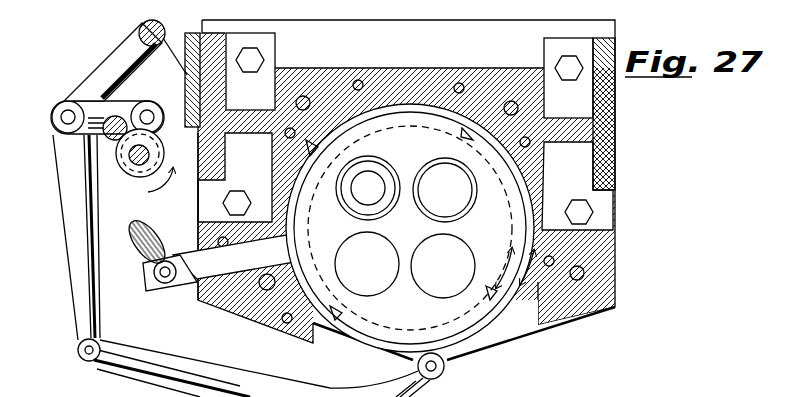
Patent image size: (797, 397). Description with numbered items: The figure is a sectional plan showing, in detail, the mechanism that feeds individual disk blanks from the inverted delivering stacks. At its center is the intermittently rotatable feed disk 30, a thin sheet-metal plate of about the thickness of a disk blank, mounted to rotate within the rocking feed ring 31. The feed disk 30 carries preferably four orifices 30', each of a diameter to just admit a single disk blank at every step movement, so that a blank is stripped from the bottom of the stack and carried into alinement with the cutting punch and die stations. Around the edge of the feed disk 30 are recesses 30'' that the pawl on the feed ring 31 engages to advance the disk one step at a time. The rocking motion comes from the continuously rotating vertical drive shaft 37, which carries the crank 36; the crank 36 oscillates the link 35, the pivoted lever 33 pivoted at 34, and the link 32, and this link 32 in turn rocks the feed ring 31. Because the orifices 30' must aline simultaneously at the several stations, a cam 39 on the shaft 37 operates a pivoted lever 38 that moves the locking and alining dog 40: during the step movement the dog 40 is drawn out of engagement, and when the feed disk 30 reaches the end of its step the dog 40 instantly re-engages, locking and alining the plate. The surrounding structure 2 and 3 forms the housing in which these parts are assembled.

The housing 2 is at (615, 157).
The frame wall 3 is at (198, 196).
The feed disk 30 is at (414, 228).
The orifices 30' is at (406, 215).
The recesses 30'' is at (410, 195).
The feed ring 31 is at (482, 323).
The link 32 is at (235, 368).
The pivoted lever 33 is at (62, 221).
The pivot 34 is at (151, 21).
The link 35 is at (93, 110).
The crank 36 is at (162, 132).
The vertical drive shaft 37 is at (129, 152).
The pivoted lever 38 is at (158, 240).
The cam 39 is at (133, 171).
The locking and alining dog 40 is at (189, 272).